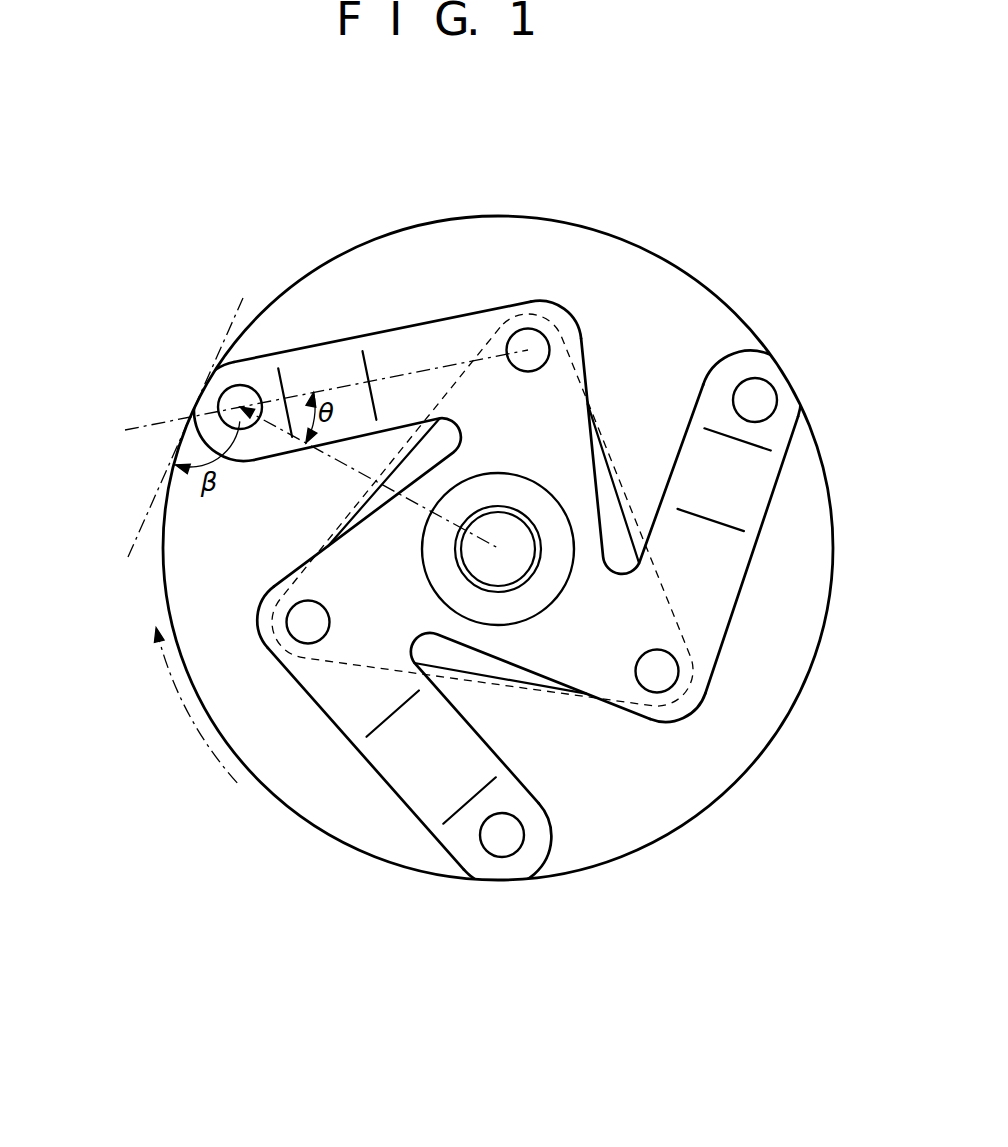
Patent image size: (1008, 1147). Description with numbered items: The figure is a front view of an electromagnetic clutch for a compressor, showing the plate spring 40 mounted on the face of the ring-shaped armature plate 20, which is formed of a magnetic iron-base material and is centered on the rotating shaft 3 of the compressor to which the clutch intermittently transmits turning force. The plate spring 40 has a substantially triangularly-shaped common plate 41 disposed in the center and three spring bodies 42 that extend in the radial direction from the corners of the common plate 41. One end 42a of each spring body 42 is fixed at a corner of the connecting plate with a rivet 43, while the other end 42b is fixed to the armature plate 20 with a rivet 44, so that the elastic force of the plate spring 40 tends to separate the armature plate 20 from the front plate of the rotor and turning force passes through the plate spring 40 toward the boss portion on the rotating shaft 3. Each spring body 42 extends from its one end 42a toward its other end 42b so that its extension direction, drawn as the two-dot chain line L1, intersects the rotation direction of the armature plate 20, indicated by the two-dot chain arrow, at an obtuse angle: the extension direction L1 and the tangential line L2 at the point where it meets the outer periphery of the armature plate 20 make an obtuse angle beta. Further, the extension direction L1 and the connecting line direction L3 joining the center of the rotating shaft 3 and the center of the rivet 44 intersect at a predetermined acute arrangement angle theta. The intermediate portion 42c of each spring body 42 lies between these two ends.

The rotating shaft 3 is at (500, 520).
The armature plate 20 is at (645, 838).
The plate spring 40 is at (511, 297).
The common plate 41 is at (587, 488).
The spring body 42 is at (427, 337).
The one end of the spring body 42a is at (581, 343).
The other end of the spring body 42b is at (222, 382).
The arm intermediate portion 42c is at (316, 358).
The rivet 43 is at (541, 343).
The rivet 44 is at (244, 392).
The extension direction L1 is at (390, 375).
The tangential line L2 is at (137, 537).
The connecting line direction L3 is at (335, 462).